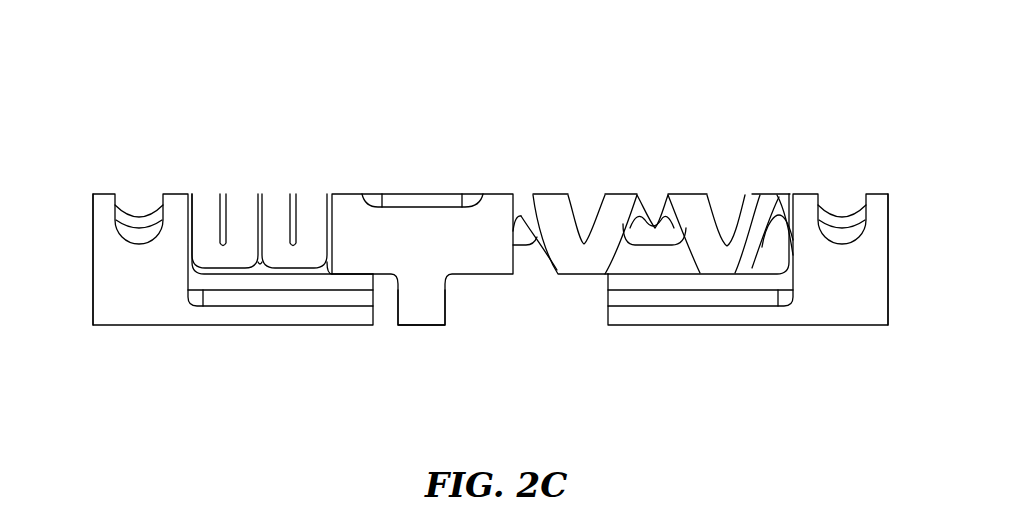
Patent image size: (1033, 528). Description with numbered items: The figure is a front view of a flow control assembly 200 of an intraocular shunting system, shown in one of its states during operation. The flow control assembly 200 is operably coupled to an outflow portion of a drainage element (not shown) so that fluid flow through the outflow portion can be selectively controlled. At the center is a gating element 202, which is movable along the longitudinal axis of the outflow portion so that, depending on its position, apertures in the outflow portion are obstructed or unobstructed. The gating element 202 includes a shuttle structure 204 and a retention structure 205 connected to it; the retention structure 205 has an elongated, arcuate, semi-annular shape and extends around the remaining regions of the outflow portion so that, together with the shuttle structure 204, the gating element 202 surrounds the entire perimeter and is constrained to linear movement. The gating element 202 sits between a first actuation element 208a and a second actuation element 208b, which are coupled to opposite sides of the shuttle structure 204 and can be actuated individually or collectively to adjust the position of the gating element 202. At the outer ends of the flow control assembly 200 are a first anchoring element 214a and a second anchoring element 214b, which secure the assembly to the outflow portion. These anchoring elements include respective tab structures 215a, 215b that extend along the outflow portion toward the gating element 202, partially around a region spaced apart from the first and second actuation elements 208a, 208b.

The flow control assembly 200 is at (233, 38).
The gating element 202 is at (476, 218).
The shuttle structure 204 is at (503, 193).
The retention structure 205 is at (416, 325).
The first actuation element 208a is at (287, 272).
The second actuation element 208b is at (725, 272).
The first anchoring element 214a is at (92, 245).
The second anchoring element 214b is at (890, 252).
The first tab structure 215a is at (336, 318).
The second tab structure 215b is at (673, 327).